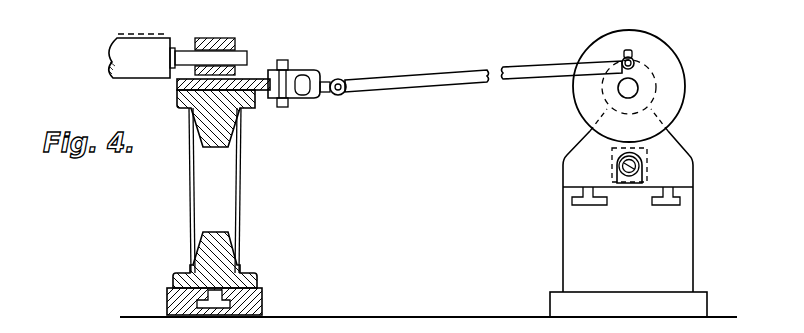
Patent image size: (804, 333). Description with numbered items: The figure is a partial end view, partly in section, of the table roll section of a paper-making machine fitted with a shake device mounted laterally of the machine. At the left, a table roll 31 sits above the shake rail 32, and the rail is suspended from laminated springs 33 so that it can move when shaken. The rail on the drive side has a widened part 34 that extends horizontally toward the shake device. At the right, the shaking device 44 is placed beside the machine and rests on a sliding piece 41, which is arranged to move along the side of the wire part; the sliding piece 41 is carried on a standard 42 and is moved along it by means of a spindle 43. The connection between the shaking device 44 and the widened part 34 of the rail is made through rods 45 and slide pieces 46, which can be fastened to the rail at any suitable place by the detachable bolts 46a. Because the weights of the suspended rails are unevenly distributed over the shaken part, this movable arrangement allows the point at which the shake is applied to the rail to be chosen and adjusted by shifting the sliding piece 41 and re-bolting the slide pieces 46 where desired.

The table roll 31 is at (125, 43).
The shake rail 32 is at (180, 97).
The laminated springs 33 is at (192, 198).
The widened part of rail 34 is at (248, 80).
The sliding piece 41 is at (672, 163).
The standard 42 is at (678, 248).
The spindle 43 is at (617, 163).
The shaking device 44 is at (673, 82).
The rods 45 is at (528, 70).
The slide pieces 46 is at (310, 96).
The detachable bolts 46a is at (283, 62).